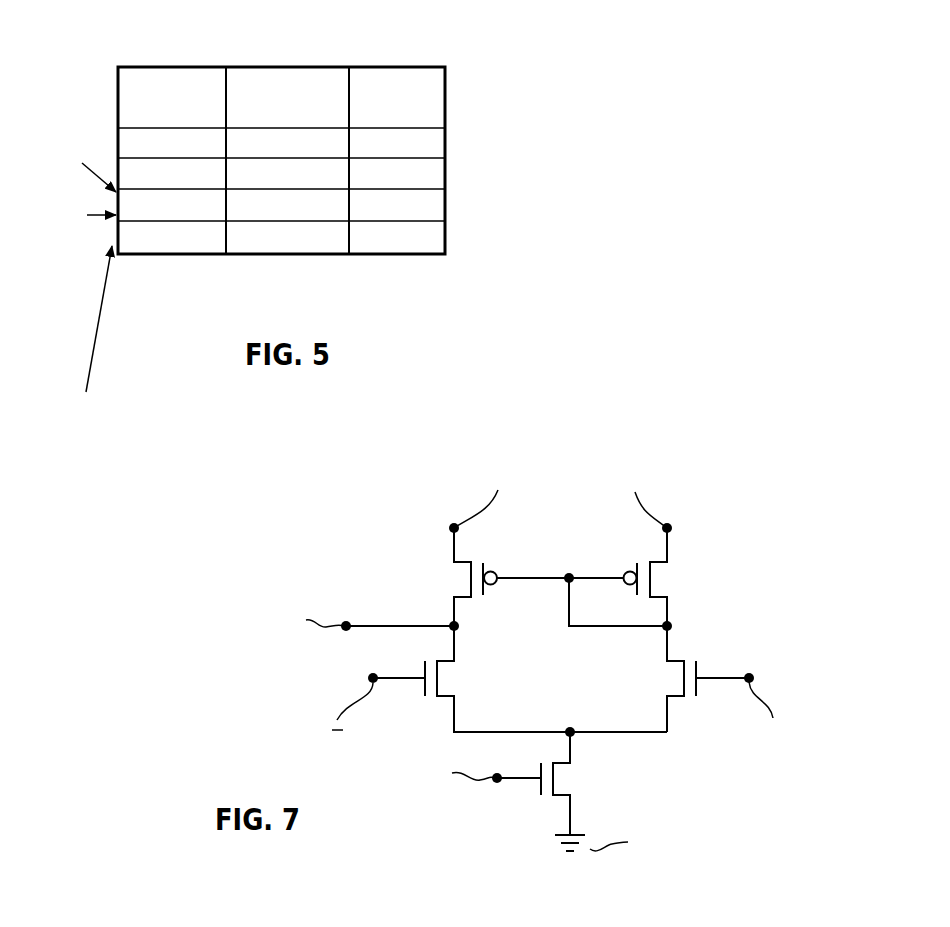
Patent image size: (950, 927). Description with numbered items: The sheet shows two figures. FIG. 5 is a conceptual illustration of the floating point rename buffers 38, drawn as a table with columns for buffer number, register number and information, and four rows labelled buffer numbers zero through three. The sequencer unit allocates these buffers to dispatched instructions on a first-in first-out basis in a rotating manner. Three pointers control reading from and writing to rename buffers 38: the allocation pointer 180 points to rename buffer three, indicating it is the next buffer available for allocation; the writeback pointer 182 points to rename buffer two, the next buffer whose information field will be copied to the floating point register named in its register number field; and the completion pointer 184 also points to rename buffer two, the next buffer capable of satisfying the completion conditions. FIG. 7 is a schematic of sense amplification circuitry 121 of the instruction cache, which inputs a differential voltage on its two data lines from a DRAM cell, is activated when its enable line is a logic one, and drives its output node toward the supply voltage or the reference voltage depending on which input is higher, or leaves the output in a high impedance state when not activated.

In FIG. 5, the floating point rename buffers 38 is at (399, 52).
In FIG. 5, the writeback pointer 182 is at (54, 128).
In FIG. 5, the completion pointer 184 is at (60, 244).
In FIG. 5, the allocation pointer 180 is at (96, 458).
In FIG. 7, the sense amplification circuitry 121 is at (686, 410).